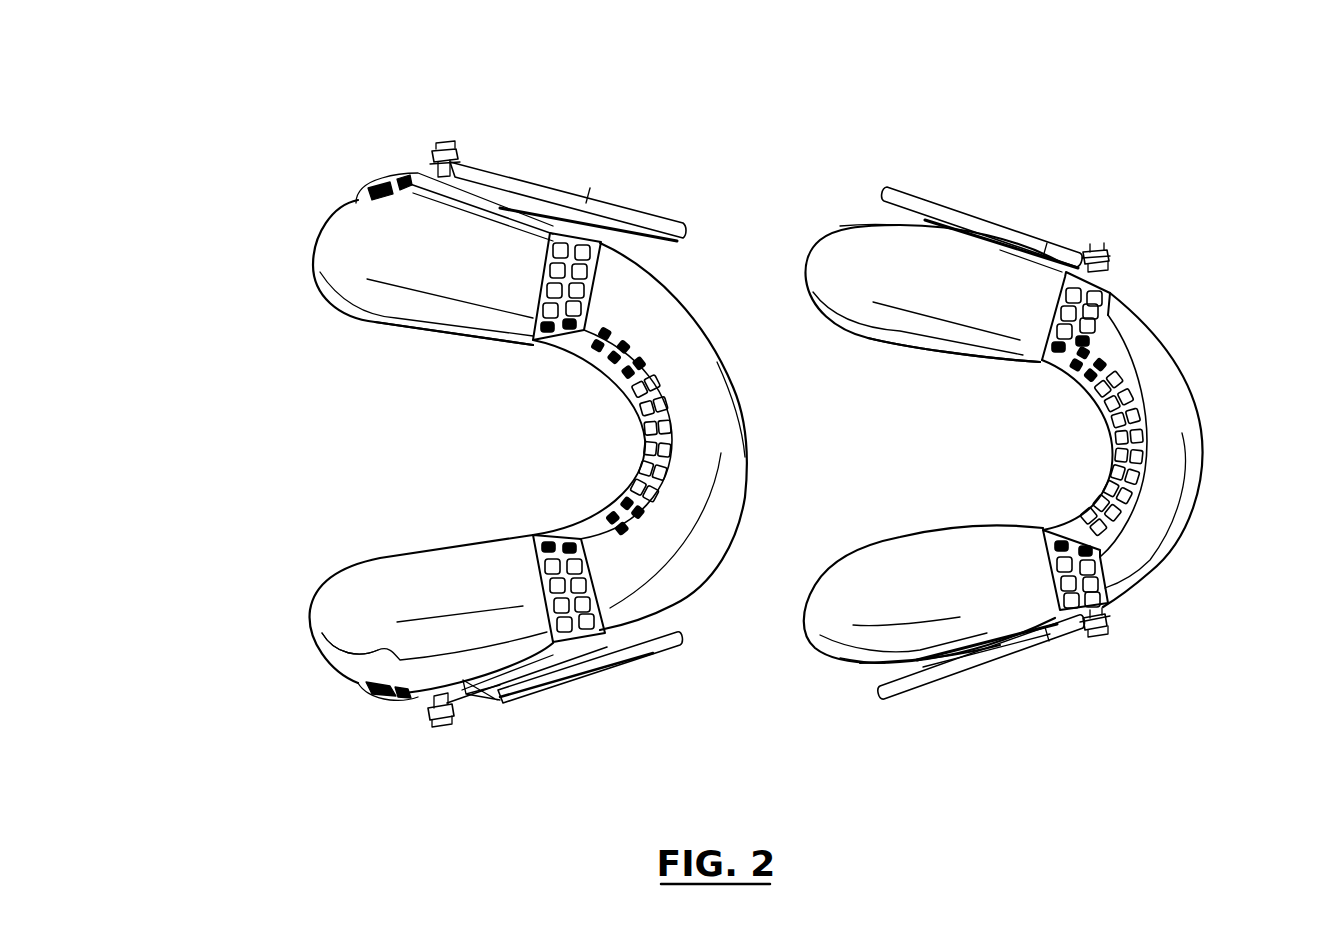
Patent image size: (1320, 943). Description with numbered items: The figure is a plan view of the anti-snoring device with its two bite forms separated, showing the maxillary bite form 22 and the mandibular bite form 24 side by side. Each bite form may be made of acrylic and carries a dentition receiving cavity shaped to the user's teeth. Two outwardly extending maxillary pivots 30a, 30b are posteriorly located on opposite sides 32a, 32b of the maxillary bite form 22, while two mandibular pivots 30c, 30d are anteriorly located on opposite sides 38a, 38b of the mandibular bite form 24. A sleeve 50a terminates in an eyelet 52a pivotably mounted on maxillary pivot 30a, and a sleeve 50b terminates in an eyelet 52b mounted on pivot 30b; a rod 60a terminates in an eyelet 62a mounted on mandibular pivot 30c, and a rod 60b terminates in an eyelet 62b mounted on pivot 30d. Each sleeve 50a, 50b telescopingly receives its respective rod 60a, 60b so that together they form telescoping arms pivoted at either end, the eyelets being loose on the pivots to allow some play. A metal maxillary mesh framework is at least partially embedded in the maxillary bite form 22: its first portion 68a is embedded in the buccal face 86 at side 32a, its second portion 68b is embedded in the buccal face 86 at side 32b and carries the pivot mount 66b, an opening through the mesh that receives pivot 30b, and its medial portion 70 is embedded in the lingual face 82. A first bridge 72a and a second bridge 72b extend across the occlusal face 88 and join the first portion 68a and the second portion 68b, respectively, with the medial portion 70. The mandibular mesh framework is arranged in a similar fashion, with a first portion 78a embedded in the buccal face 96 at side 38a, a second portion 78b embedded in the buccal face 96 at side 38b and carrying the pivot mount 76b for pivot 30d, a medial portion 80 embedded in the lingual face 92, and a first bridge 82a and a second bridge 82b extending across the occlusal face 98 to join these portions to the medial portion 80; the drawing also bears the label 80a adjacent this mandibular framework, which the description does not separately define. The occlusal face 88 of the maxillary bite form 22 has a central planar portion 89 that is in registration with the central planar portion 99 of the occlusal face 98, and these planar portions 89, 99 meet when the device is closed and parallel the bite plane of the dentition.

The maxillary bite form 22 is at (311, 250).
The mandibular bite form 24 is at (1182, 363).
The maxillary pivot 30a is at (447, 152).
The maxillary pivot 30b is at (435, 714).
The mandibular pivot 30c is at (1105, 625).
The mandibular pivot 30d is at (1100, 250).
The side of maxillary bite form 32a is at (360, 188).
The side of maxillary bite form 32b is at (356, 681).
The side of mandibular bite form 38a is at (870, 663).
The side of mandibular bite form 38b is at (850, 222).
The sleeve 50a is at (557, 192).
The sleeve 50b is at (560, 673).
The eyelet 52a is at (432, 158).
The eyelet 52b is at (420, 712).
The rod 60a is at (1000, 653).
The rod 60b is at (993, 220).
The eyelet 62a is at (1108, 612).
The eyelet 62b is at (1108, 260).
The pivot mount 66b is at (392, 680).
The first portion of maxillary mesh framework 68a is at (508, 226).
The second portion of maxillary mesh framework 68b is at (498, 672).
The medial portion of maxillary mesh framework 70 is at (660, 395).
The first bridge 72a is at (601, 285).
The second bridge 72b is at (535, 580).
The pivot mount 76b is at (1128, 311).
The first portion of mandibular mesh framework 78a is at (1057, 617).
The second portion of mandibular mesh framework 78b is at (1013, 254).
The medial portion of mandibular mesh framework 80 is at (1097, 452).
The perforated arc 80a is at (1150, 421).
The lingual face 82 is at (419, 322).
The first bridge 82a is at (1041, 564).
The second bridge 82b is at (1049, 310).
The buccal face 86 is at (680, 590).
The occlusal face 88 is at (446, 255).
The central planar portion 89 is at (654, 562).
The lingual face 92 is at (877, 341).
The buccal face 96 is at (897, 663).
The occlusal face 98 is at (886, 282).
The central planar portion 99 is at (951, 598).